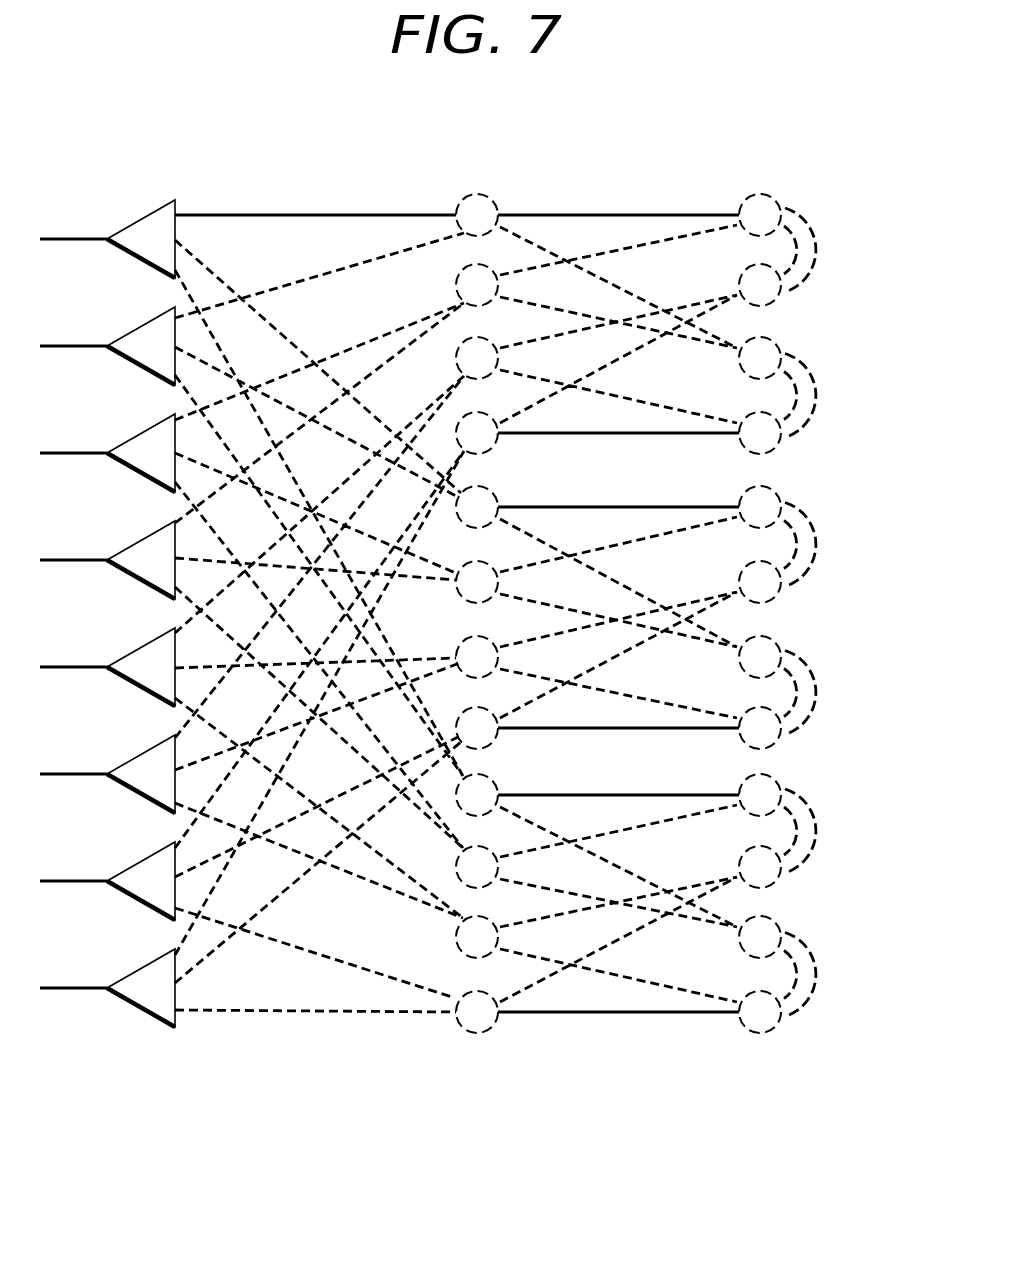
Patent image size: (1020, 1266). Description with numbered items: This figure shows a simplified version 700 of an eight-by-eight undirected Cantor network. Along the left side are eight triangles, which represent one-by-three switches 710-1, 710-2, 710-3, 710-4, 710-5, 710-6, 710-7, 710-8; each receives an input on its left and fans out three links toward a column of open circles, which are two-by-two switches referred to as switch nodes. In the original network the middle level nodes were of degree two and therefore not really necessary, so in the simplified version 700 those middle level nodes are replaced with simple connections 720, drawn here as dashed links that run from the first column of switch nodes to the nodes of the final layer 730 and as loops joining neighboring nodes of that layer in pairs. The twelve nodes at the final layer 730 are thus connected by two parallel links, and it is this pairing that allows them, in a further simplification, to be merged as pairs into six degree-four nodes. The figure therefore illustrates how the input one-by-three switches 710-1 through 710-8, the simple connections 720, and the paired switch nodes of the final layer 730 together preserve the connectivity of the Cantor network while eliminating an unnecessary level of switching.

The simplified 8×8 undirected Cantor network 700 is at (708, 116).
The 1×3 switch 710-1 is at (140, 221).
The 1×3 switch 710-2 is at (140, 328).
The 1×3 switch 710-3 is at (140, 435).
The 1×3 switch 710-4 is at (140, 542).
The 1×3 switch 710-5 is at (140, 649).
The 1×3 switch 710-6 is at (140, 756).
The 1×3 switch 710-7 is at (140, 863).
The 1×3 switch 710-8 is at (140, 970).
The simple connections 720 is at (843, 245).
The final layer 730 is at (756, 1062).